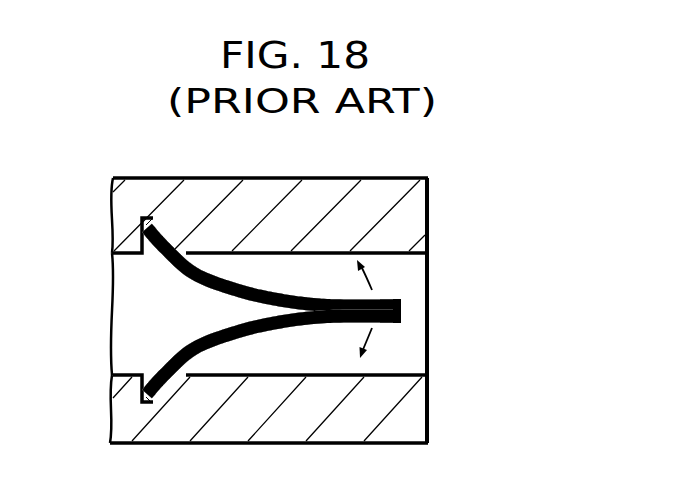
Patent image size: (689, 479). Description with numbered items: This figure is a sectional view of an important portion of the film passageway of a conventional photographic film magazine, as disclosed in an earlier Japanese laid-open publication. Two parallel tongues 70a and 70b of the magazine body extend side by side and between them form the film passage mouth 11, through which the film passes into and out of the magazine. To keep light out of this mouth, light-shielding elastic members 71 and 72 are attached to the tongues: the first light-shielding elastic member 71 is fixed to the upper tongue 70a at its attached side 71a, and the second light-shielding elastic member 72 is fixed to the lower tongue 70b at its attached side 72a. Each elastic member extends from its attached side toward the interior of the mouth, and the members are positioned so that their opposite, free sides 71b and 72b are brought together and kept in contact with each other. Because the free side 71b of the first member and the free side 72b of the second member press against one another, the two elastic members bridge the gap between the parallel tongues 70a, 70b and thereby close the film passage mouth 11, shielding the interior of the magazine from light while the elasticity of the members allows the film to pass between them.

The parallel tongue 70a is at (412, 214).
The parallel tongue 70b is at (412, 417).
The light-shielding elastic member 71 is at (213, 300).
The attached side 71a is at (158, 236).
The free side 71b is at (380, 300).
The light-shielding elastic member 72 is at (283, 331).
The attached side 72a is at (175, 378).
The free side 72b is at (382, 322).
The film passage mouth 11 is at (430, 313).